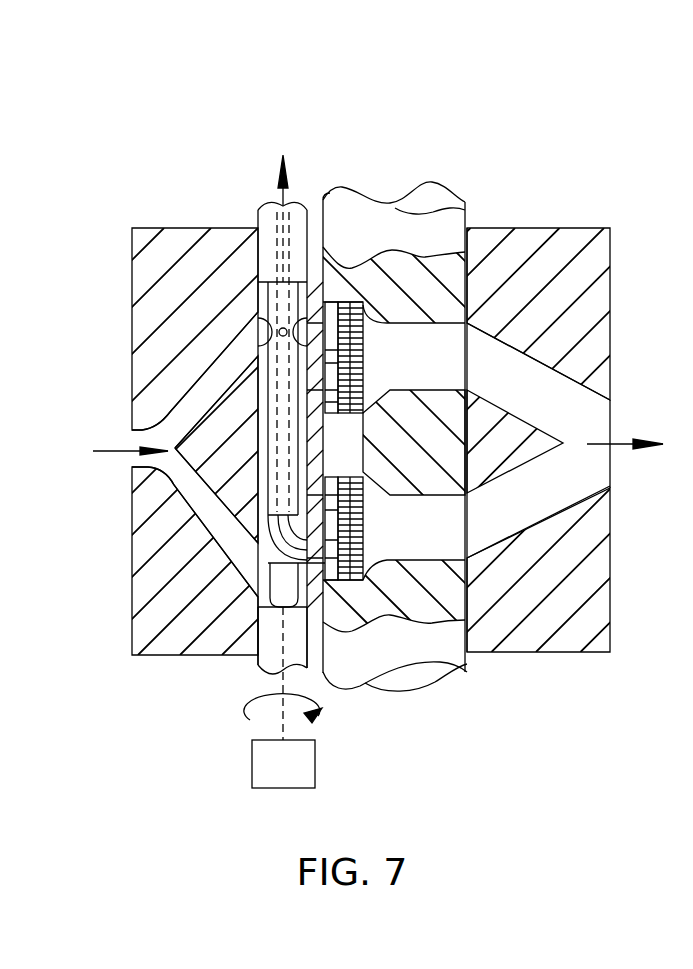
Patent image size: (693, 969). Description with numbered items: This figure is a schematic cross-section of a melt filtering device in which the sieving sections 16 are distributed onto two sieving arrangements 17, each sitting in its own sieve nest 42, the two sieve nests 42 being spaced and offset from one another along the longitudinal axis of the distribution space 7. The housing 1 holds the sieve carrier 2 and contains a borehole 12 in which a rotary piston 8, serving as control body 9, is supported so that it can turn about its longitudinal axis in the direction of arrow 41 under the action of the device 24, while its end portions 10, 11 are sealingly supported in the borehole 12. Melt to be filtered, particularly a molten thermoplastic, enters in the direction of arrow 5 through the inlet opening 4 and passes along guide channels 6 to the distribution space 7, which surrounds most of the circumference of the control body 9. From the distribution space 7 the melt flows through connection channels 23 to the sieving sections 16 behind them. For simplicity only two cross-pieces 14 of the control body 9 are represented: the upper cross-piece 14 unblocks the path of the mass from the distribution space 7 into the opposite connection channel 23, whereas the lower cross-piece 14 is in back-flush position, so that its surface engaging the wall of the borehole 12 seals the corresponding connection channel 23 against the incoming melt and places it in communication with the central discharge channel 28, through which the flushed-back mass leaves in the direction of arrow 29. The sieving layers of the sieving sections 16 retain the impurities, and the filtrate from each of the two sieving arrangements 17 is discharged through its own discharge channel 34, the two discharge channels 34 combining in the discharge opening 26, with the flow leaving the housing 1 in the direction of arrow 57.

The housing 1 is at (598, 210).
The sieve carrier 2 is at (402, 233).
The inlet opening 4 is at (153, 470).
The arrow 5 is at (113, 450).
The guide channels 6 is at (210, 377).
The distribution space 7 is at (263, 360).
The rotary piston 8 is at (272, 652).
The control body 9 is at (258, 483).
The cylindrical portion 10 is at (263, 253).
The cylindrical portion 11 is at (270, 648).
The borehole 12 is at (347, 187).
The cross-pieces 14 is at (263, 330).
The sieving sections 16 is at (365, 327).
The sieving arrangements 17 is at (372, 370).
The connection channels 23 is at (258, 565).
The device 24 is at (275, 765).
The discharge opening 26 is at (603, 460).
The discharge channel 28 is at (283, 250).
The arrow 29 is at (284, 203).
The discharge channel 34 is at (475, 358).
The arrow 41 is at (245, 708).
The sieve nest 42 is at (375, 310).
The arrow 57 is at (607, 440).